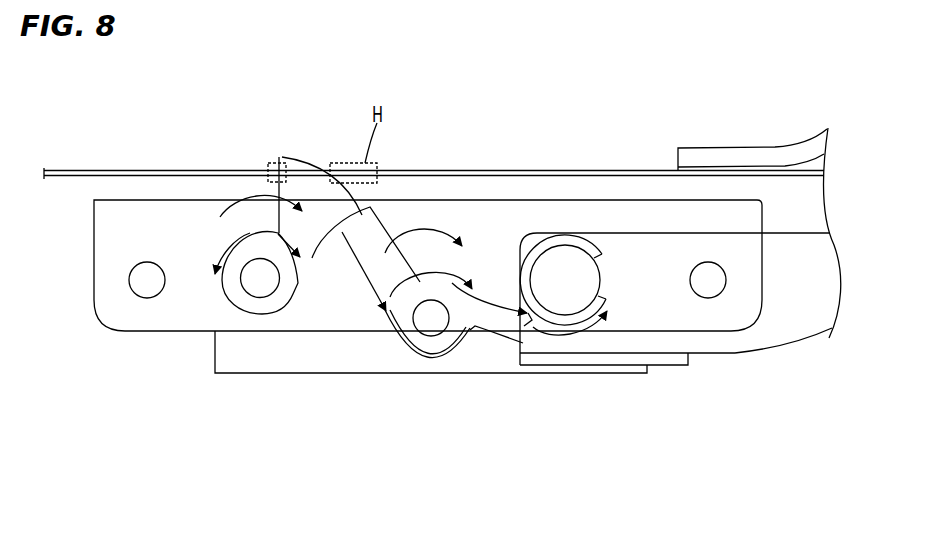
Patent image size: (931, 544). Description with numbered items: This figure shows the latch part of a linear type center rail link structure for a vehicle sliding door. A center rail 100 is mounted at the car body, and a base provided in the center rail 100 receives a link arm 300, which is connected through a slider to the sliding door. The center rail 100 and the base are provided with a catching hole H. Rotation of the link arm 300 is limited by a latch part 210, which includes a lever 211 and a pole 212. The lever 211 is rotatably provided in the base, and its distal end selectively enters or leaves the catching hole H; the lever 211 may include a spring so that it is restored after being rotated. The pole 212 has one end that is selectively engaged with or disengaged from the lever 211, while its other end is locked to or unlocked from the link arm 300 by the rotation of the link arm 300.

The center rail 100 is at (141, 170).
The latch part 210 is at (403, 437).
The lever 211 is at (307, 247).
The pole 212 is at (428, 348).
The link arm 300 is at (673, 313).